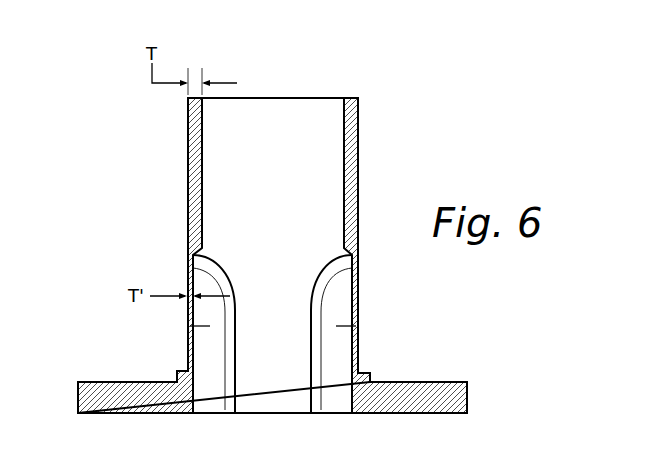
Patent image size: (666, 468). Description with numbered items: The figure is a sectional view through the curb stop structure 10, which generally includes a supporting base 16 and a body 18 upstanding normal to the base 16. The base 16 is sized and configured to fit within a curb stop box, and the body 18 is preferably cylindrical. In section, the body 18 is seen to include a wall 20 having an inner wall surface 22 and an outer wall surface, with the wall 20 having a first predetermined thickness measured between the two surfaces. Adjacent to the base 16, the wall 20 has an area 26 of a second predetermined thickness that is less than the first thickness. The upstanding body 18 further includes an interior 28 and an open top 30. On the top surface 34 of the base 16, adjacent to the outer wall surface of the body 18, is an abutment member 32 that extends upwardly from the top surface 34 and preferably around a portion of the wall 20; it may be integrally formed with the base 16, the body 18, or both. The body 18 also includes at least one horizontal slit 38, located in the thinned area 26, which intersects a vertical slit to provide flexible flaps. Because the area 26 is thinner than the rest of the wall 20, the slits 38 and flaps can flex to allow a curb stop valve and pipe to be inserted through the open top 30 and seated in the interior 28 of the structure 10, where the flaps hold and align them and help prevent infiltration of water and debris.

The curb stop structure 10 is at (366, 83).
The supporting base 16 is at (467, 390).
The body 18 is at (188, 143).
The wall 20 is at (188, 197).
The inner wall surface 22 is at (344, 153).
The area having second predetermined thickness 26 is at (361, 302).
The interior 28 is at (286, 189).
The open top 30 is at (262, 112).
The abutment member 32 is at (366, 372).
The top surface 34 is at (90, 382).
The horizontal slit 38 is at (188, 343).